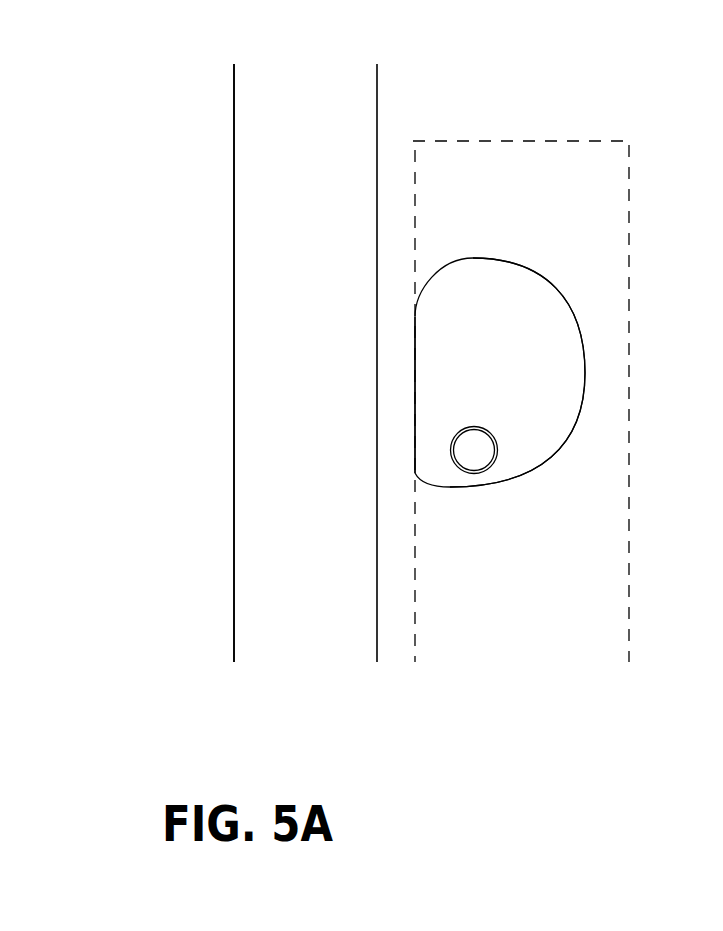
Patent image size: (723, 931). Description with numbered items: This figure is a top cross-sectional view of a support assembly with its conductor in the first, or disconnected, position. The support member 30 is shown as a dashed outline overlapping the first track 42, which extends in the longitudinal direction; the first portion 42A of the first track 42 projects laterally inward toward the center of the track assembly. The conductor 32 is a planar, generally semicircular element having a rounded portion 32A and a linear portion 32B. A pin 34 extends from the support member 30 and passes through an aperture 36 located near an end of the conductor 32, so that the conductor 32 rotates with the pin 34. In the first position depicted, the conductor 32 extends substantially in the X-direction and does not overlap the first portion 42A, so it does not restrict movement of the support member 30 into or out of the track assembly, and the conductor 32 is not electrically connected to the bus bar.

The support member 30 is at (562, 123).
The conductor 32 is at (450, 514).
The rounded portion 32A is at (571, 291).
The linear portion 32B is at (403, 334).
The pin 34 is at (477, 457).
The aperture 36 is at (497, 455).
The first track 42 is at (197, 264).
The first portion 42A is at (269, 192).